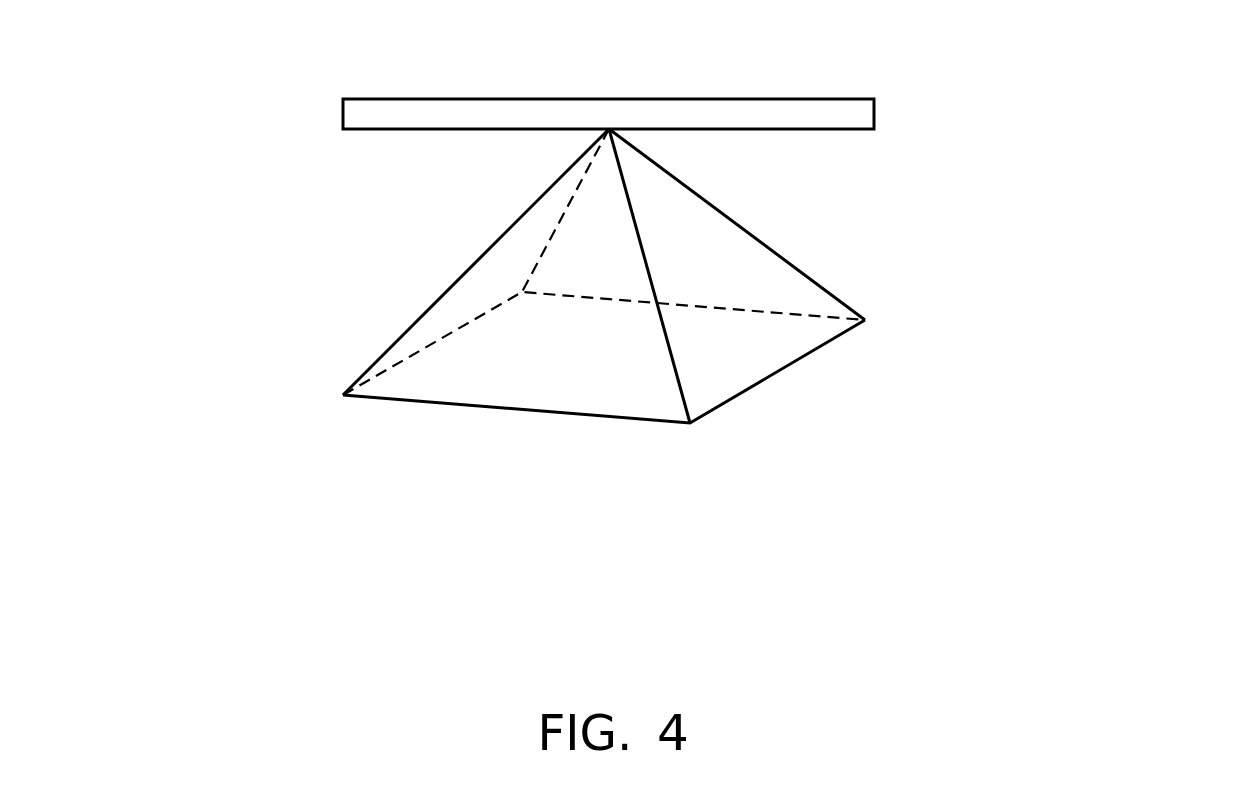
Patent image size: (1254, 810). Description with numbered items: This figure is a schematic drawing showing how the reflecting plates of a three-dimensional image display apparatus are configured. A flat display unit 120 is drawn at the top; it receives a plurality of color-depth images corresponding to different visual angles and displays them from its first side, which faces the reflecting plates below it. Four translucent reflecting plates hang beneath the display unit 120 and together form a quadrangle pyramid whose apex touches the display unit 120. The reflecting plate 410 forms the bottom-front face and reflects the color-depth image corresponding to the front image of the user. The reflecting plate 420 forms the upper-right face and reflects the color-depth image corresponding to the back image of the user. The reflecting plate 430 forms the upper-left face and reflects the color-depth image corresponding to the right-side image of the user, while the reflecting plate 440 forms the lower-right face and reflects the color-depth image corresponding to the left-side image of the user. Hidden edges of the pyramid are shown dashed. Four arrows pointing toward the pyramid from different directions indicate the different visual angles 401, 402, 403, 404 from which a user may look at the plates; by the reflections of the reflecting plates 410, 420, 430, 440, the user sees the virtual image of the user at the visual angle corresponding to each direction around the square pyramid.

The display unit 120 is at (607, 98).
The visual angle 401 is at (519, 374).
The visual angle 402 is at (822, 232).
The visual angle 403 is at (347, 335).
The visual angle 404 is at (925, 385).
The reflecting plate 410 is at (548, 377).
The reflecting plate 420 is at (707, 257).
The reflecting plate 430 is at (530, 257).
The reflecting plate 440 is at (755, 342).